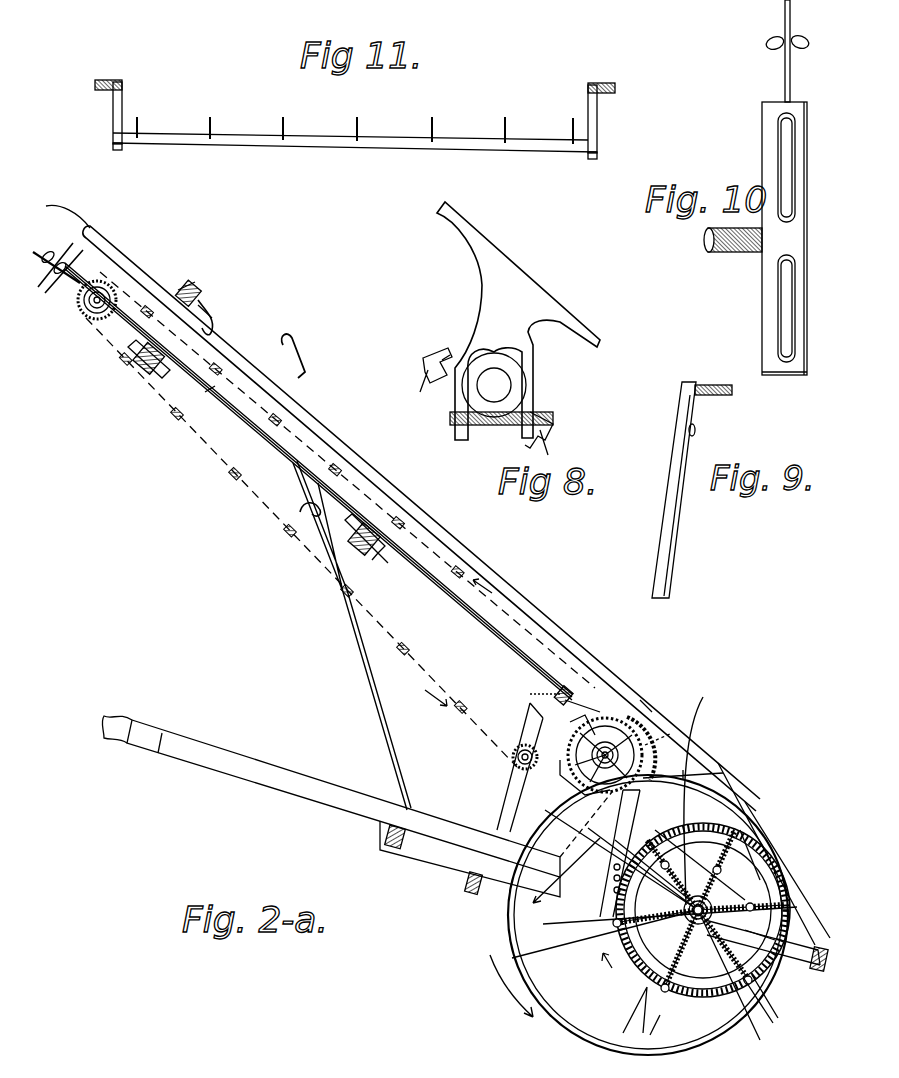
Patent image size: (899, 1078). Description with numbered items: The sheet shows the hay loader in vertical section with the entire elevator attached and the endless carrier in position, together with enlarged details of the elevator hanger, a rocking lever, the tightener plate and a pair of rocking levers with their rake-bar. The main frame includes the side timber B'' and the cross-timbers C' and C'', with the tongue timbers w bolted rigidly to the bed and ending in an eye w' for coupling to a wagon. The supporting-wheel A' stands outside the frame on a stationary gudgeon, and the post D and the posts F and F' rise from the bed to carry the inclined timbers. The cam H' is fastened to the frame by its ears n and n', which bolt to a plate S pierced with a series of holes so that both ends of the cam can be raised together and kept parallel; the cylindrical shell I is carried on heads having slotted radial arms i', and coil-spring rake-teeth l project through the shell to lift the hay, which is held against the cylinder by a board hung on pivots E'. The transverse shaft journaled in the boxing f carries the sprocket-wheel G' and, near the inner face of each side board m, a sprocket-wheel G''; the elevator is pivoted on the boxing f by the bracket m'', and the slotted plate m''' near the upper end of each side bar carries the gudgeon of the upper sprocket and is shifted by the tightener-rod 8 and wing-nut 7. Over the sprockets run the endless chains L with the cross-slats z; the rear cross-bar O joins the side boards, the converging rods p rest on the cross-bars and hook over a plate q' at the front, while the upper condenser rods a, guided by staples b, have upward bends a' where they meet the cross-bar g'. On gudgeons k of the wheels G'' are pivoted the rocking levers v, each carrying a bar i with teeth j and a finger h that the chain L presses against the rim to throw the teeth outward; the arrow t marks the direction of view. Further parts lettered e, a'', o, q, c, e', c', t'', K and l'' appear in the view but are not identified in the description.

In FIG. 11, the finger h is at (355, 77).
In FIG. 9, the finger h is at (713, 380).
In FIG. 2A, the finger h is at (537, 692).
In FIG. 11, the rocking lever v is at (362, 120).
In FIG. 9, the rocking lever v is at (674, 490).
In FIG. 11, the teeth j is at (355, 125).
In FIG. 11, the rake-bar i is at (355, 141).
In FIG. 2A, the rake-bar i is at (649, 748).
In FIG. 10, the wing-nut 7 is at (801, 51).
In FIG. 2A, the wing-nut 7 is at (53, 268).
In FIG. 10, the tightener-rod 8 is at (787, 29).
In FIG. 2A, the tightener-rod 8 is at (54, 272).
In FIG. 10, the slotted plate m''' is at (770, 238).
In FIG. 2A, the slotted plate m''' is at (403, 508).
In FIG. 8, the bracket m'' is at (518, 321).
In FIG. 2A, the bracket m'' is at (585, 745).
In FIG. 8, the boxing f is at (485, 396).
In FIG. 2A, the side boards m is at (318, 481).
In FIG. 2A, the arrow t is at (301, 542).
In FIG. 2A, the cross-slats z is at (347, 500).
In FIG. 2A, the sprocket-wheel G'' is at (294, 525).
In FIG. 2A, the cross-bar g' is at (186, 301).
In FIG. 2A, the hook e is at (209, 314).
In FIG. 2A, the upward bend a' is at (144, 357).
In FIG. 2A, the guide q is at (333, 444).
In FIG. 2A, the plate q' is at (352, 635).
In FIG. 2A, the carrier lug a'' is at (382, 563).
In FIG. 2A, the catch o is at (302, 504).
In FIG. 2A, the rods p is at (206, 395).
In FIG. 2A, the endless chains L is at (389, 568).
In FIG. 2A, the rear cross-bar O is at (562, 684).
In FIG. 2A, the tongue timbers w is at (343, 798).
In FIG. 2A, the eye w' is at (117, 719).
In FIG. 2A, the side timber B'' is at (470, 859).
In FIG. 2A, the cross-timber C'' is at (385, 836).
In FIG. 2A, the cross-timber C' is at (466, 884).
In FIG. 2A, the post D is at (520, 767).
In FIG. 2A, the sprocket-wheel G' is at (597, 755).
In FIG. 2A, the rods a is at (642, 700).
In FIG. 2A, the staples b is at (697, 801).
In FIG. 2A, the gudgeons k is at (683, 791).
In FIG. 2A, the axle l'' is at (670, 849).
In FIG. 2A, the rake-teeth l is at (615, 911).
In FIG. 2A, the supporting-wheel A' is at (648, 915).
In FIG. 2A, the internal gear ring K is at (703, 896).
In FIG. 2A, the cam H' is at (698, 912).
In FIG. 2A, the ear n is at (671, 893).
In FIG. 2A, the ear n' is at (762, 944).
In FIG. 2A, the frame end block c is at (776, 867).
In FIG. 2A, the connecting rod e' is at (564, 876).
In FIG. 2A, the link c' is at (586, 824).
In FIG. 2A, the pivots E' is at (700, 865).
In FIG. 2A, the post F' is at (652, 869).
In FIG. 2A, the post F is at (744, 855).
In FIG. 2A, the plate S is at (760, 933).
In FIG. 2A, the rotation arrow t'' is at (551, 985).
In FIG. 2A, the slotted radial arms i' is at (657, 1017).
In FIG. 2A, the cylindrical shell I is at (760, 999).